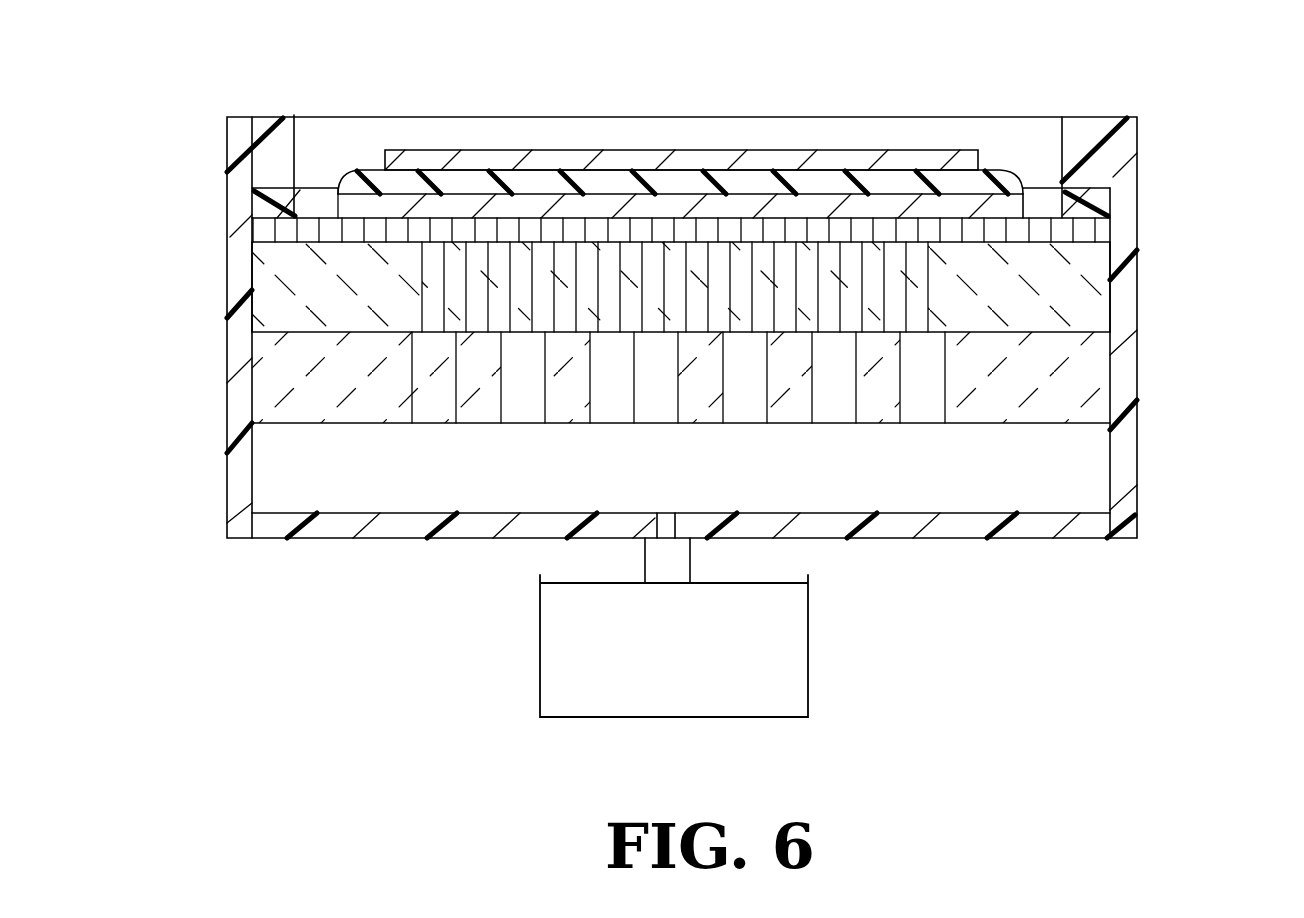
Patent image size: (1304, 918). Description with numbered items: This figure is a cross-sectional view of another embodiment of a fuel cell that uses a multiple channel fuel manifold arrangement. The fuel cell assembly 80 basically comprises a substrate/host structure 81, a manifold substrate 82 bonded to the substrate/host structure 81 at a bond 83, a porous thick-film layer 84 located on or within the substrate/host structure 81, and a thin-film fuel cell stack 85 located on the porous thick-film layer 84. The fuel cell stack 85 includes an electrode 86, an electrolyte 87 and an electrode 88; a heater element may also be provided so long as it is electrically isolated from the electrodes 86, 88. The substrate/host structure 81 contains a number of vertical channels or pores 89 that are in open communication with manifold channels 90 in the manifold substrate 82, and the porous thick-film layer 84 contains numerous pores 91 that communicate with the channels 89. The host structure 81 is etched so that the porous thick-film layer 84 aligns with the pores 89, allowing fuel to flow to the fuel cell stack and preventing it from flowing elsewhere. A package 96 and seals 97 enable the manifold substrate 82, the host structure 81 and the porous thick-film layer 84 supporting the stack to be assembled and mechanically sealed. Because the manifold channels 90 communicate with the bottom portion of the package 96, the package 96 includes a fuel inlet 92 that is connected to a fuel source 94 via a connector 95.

The fuel cell assembly 80 is at (803, 50).
The substrate/host structure 81 is at (1080, 296).
The manifold substrate 82 is at (1090, 396).
The bond 83 is at (1113, 332).
The porous thick-film layer 84 is at (1082, 229).
The thin-film fuel cell stack 85 is at (597, 104).
The electrode 86 is at (460, 207).
The electrolyte 87 is at (998, 171).
The electrode 88 is at (657, 150).
The vertical channels or pores 89 is at (430, 322).
The manifold channels 90 is at (527, 404).
The pores 91 is at (893, 232).
The fuel inlet 92 is at (667, 522).
The fuel source 94 is at (808, 675).
The connector 95 is at (690, 563).
The package 96 is at (236, 232).
The seals 97 is at (298, 205).